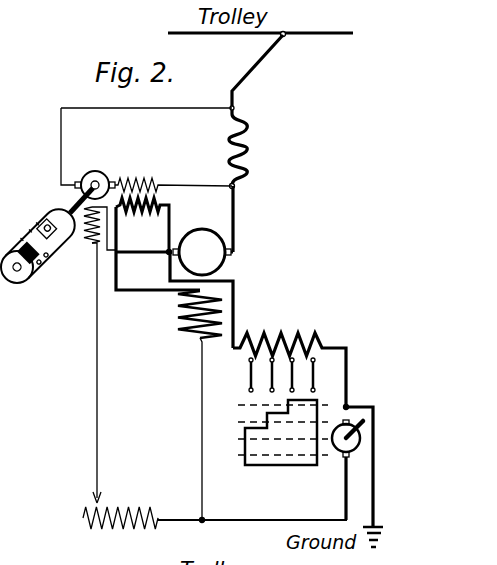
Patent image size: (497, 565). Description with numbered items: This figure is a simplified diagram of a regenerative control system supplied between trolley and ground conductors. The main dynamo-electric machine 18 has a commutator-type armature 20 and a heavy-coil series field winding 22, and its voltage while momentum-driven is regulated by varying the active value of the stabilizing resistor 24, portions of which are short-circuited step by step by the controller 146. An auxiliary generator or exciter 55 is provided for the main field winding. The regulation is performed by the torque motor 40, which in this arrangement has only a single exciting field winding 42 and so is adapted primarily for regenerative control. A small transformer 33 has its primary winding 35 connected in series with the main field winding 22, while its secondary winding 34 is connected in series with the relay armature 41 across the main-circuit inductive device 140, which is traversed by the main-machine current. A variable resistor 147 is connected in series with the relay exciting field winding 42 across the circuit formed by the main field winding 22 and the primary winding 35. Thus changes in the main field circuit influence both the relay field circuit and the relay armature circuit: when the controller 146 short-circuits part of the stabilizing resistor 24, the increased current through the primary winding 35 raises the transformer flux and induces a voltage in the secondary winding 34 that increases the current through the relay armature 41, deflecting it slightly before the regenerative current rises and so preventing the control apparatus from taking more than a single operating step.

The main dynamo-electric machine 18 is at (257, 269).
The armature 20 is at (212, 242).
The field winding 22 is at (198, 336).
The stabilizing resistor 24 is at (316, 340).
The small transformer 33 is at (162, 193).
The secondary winding 34 is at (152, 180).
The primary winding 35 is at (143, 215).
The torque motor 40 is at (54, 193).
The armature 41 is at (116, 170).
The exciting field winding 42 is at (92, 248).
The exciter 55 is at (350, 450).
The inductive device 140 is at (236, 160).
The controller 146 is at (288, 465).
The variable resistor 147 is at (149, 528).